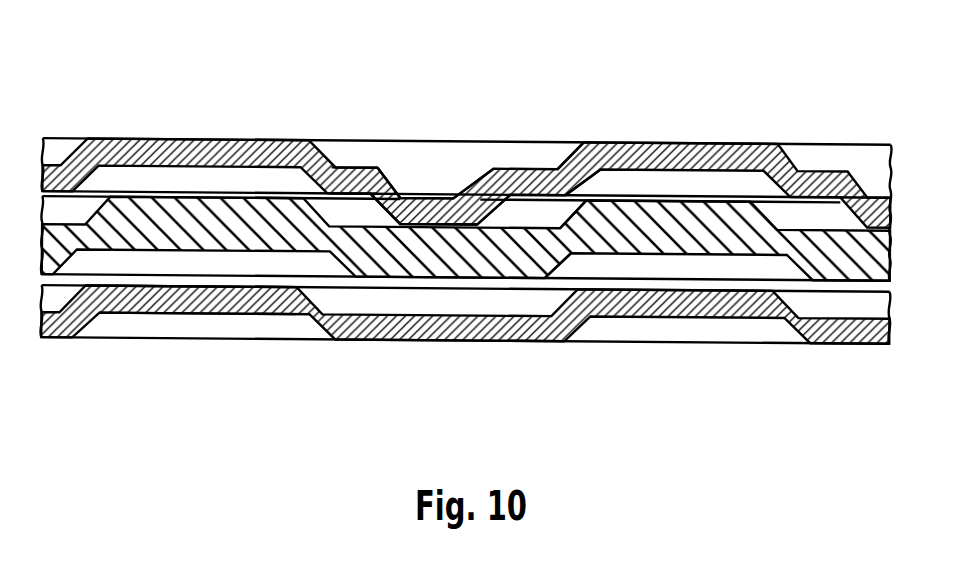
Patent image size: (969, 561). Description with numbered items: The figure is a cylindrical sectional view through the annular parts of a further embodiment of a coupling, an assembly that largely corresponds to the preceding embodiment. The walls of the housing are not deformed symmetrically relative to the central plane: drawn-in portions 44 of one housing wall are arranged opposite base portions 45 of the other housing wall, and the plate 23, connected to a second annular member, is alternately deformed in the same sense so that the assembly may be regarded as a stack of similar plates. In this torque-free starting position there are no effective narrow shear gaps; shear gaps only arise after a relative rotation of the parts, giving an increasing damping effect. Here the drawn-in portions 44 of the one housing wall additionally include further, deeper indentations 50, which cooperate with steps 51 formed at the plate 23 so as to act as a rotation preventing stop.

The drawn-in portions 44 is at (193, 382).
The base portions 45 is at (388, 382).
The deeper indentations 50 is at (443, 200).
The steps 51 is at (565, 200).
The plate 23 is at (500, 286).